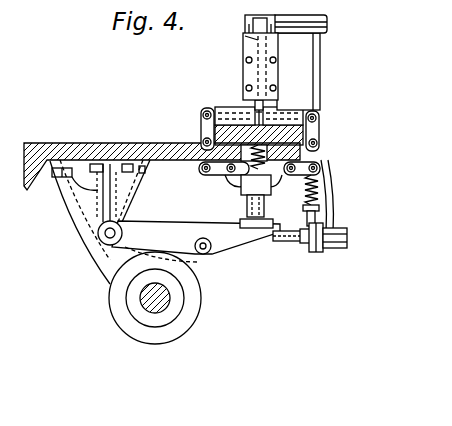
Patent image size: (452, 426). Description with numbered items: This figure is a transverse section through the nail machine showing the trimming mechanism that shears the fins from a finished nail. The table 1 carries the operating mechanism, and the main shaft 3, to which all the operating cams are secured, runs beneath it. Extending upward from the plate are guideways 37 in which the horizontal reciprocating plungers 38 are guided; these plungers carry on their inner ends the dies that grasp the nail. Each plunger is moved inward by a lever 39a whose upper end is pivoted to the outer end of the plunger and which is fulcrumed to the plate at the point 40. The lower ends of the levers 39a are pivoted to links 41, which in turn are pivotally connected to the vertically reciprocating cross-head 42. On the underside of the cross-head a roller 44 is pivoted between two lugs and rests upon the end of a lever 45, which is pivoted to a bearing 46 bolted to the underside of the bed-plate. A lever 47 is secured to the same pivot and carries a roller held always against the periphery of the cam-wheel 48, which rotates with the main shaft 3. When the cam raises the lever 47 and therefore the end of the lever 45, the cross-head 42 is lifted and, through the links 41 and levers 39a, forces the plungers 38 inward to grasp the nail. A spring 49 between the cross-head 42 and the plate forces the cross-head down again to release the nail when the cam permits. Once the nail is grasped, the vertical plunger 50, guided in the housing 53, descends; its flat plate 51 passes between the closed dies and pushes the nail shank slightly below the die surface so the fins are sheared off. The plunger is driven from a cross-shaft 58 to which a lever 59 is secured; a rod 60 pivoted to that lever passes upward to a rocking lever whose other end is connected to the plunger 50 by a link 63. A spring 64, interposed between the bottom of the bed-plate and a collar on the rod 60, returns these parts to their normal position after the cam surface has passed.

The table 1 is at (70, 143).
The main shaft 3 is at (148, 308).
The guideways 37 is at (230, 111).
The reciprocating plungers 38 is at (204, 112).
The levers 39a is at (334, 127).
The pivot point 40 is at (202, 141).
The links 41 is at (220, 174).
The cross-head 42 is at (250, 185).
The roller 44 is at (260, 229).
The lever 45 is at (240, 233).
The bearing 46 is at (100, 221).
The lever 47 is at (198, 256).
The cam-wheel 48 is at (188, 324).
The spring 49 is at (263, 164).
The plunger 50 is at (243, 50).
The flat plate 51 is at (255, 104).
The housing 53 is at (275, 70).
The cross-shaft 58 is at (294, 246).
The lever 59 is at (316, 253).
The rod 60 is at (318, 82).
The link 63 is at (262, 48).
The spring 64 is at (318, 194).